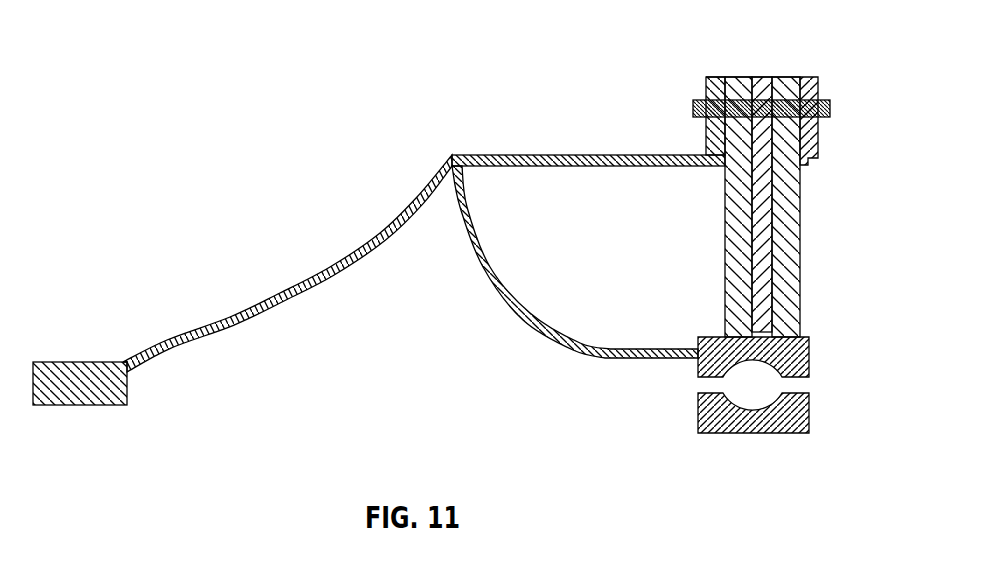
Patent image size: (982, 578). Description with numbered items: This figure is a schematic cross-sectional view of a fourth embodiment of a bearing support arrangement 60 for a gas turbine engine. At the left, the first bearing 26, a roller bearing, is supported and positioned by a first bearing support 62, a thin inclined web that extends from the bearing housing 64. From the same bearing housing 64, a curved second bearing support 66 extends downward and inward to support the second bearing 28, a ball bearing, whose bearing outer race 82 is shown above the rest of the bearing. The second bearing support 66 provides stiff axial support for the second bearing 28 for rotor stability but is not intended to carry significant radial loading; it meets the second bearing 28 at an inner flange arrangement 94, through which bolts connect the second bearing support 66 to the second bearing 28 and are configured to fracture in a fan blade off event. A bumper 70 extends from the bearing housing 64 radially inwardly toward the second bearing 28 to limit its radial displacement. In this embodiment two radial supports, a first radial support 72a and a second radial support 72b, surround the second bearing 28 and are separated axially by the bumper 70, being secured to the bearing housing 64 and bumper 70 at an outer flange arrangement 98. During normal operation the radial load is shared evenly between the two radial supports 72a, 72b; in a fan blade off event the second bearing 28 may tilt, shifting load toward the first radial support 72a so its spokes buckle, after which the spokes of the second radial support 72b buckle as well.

The first bearing 26 is at (81, 390).
The second bearing 28 is at (719, 413).
The bearing support arrangement 60 is at (127, 49).
The first bearing support 62 is at (233, 318).
The bearing housing 64 is at (547, 155).
The second bearing support 66 is at (522, 328).
The bumper 70 is at (762, 77).
The first radial support 72a is at (735, 248).
The second radial support 72b is at (786, 224).
The bearing outer race 82 is at (796, 353).
The inner flange arrangement 94 is at (680, 372).
The outer flange arrangement 98 is at (824, 53).